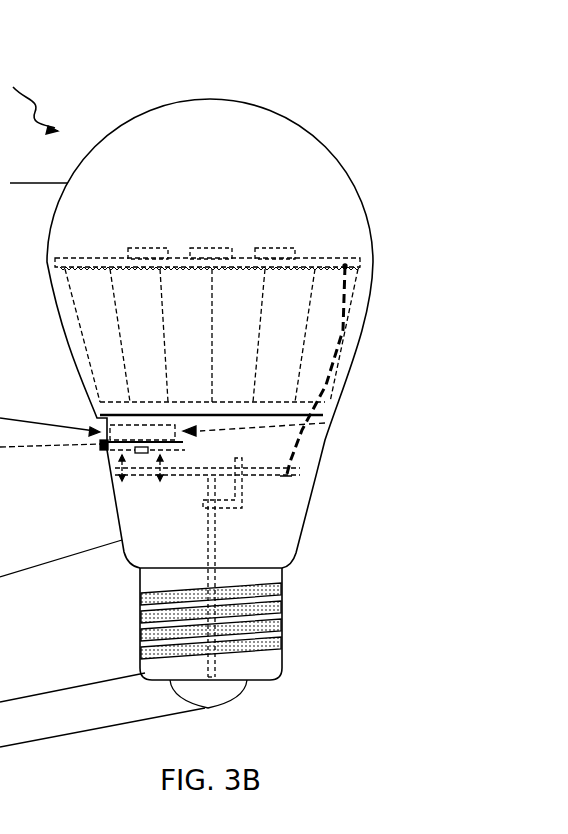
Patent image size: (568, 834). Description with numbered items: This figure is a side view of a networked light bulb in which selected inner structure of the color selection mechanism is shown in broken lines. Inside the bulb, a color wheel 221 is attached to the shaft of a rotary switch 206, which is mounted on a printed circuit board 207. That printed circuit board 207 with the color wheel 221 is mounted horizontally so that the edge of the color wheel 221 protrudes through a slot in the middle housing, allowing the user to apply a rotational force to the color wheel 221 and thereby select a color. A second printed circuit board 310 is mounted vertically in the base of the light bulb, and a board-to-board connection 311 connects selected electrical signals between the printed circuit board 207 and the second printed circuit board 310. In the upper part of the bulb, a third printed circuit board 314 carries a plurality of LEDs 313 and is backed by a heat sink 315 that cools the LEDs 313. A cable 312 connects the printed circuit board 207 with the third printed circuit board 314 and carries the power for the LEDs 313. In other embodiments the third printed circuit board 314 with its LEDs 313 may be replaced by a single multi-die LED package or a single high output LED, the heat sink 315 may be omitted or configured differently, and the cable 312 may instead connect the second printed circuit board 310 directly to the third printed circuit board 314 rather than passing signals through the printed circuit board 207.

The LEDs 313 is at (140, 246).
The third printed circuit board 314 is at (327, 260).
The heat sink 315 is at (78, 318).
The cable 312 is at (312, 393).
The color wheel 221 is at (326, 423).
The printed circuit board 207 is at (300, 471).
The board-to-board connection 311 is at (246, 497).
The second printed circuit board 310 is at (220, 540).
The rotary switch 206 is at (115, 460).